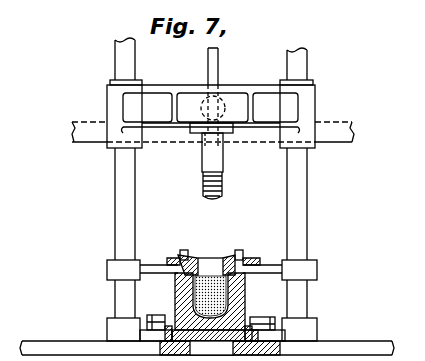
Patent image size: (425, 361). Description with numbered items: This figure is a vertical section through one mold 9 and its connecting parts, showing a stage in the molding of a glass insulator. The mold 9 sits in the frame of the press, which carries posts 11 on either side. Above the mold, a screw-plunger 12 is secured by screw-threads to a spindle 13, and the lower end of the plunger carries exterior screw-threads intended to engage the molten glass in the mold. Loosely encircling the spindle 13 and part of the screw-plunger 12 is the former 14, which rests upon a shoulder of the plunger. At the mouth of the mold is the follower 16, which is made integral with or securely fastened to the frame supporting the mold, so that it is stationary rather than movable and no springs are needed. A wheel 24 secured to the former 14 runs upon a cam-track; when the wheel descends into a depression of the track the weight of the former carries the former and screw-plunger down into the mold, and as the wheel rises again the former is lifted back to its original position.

The mold 9 is at (247, 298).
The posts 11 is at (135, 232).
The screw-plunger 12 is at (222, 190).
The spindle 13 is at (206, 63).
The former 14 is at (203, 160).
The follower 16 is at (232, 258).
The wheel 24 is at (221, 108).